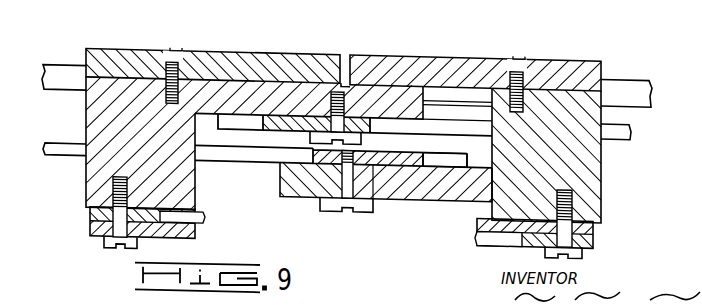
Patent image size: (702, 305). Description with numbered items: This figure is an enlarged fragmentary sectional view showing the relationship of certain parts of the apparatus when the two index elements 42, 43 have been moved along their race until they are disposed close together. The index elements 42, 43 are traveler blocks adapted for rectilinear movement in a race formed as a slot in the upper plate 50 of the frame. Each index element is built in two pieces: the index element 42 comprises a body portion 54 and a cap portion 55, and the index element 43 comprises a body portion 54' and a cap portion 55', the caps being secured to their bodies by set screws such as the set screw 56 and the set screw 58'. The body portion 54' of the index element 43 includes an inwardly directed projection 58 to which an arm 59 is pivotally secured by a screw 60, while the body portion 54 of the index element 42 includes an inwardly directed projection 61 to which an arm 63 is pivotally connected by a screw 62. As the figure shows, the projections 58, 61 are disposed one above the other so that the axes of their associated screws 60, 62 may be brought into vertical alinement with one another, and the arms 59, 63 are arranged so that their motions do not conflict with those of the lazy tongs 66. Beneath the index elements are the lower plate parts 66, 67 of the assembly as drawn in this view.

The index element 42 is at (142, 47).
The index element 43 is at (586, 48).
The upper plate 50 is at (636, 62).
The body portion 54 is at (119, 143).
The body portion 54' is at (564, 156).
The cap portion 55 is at (213, 50).
The cap portion 55' is at (475, 56).
The set screw 56 is at (180, 48).
The projection 58 is at (386, 198).
The screw 58' is at (545, 69).
The arm 59 is at (246, 148).
The screw 60 is at (333, 199).
The projection 61 is at (311, 75).
The screw 62 is at (362, 129).
The arm 63 is at (437, 122).
The lazy tongs 66 is at (90, 215).
The screw head 67 is at (110, 237).